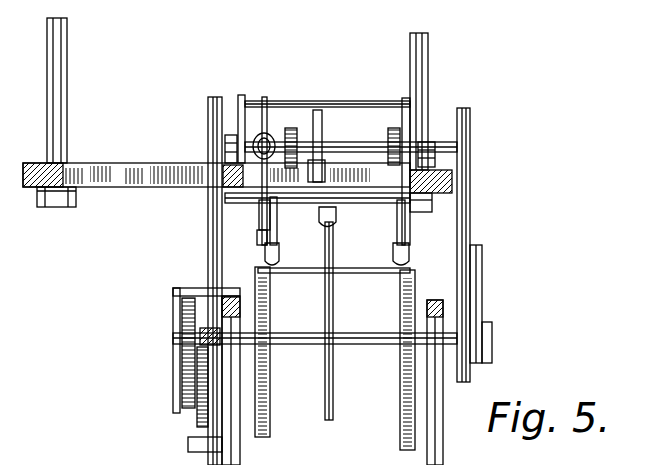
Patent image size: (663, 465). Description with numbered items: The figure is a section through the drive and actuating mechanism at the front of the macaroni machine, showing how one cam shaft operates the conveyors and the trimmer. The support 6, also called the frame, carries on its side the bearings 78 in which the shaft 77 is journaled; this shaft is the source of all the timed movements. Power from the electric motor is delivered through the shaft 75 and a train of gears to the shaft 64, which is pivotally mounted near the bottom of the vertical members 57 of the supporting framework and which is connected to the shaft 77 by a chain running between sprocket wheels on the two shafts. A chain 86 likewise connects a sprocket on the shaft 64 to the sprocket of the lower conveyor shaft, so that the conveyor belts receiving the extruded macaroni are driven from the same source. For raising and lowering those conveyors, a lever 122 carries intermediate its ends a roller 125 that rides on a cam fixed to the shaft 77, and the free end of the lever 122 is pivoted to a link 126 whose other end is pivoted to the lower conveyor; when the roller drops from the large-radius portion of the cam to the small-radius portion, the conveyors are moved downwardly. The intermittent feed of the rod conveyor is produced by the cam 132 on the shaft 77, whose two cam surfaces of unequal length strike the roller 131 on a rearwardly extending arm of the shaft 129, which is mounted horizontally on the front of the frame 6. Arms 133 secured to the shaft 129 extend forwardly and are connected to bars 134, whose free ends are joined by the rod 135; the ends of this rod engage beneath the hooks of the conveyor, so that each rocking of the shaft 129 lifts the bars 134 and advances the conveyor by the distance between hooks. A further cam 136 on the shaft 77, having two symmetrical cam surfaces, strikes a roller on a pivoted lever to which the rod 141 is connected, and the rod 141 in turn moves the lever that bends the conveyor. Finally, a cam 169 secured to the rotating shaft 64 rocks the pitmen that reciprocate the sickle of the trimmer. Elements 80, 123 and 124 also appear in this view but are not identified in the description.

The support 6 is at (133, 165).
The shaft 75 is at (208, 245).
The shaft 77 is at (363, 147).
The bearings 78 is at (232, 135).
The frame plate 80 is at (471, 228).
The chain 86 is at (483, 295).
The vertical members 57 is at (250, 305).
The shaft 64 is at (313, 340).
The lever 122 is at (261, 212).
The bar 123 is at (266, 97).
The bar 124 is at (245, 100).
The roller 125 is at (270, 133).
The link 126 is at (258, 238).
The shaft 129 is at (378, 205).
The roller 131 is at (292, 128).
The cam 132 is at (320, 112).
The arms 133 is at (278, 225).
The bars 134 is at (265, 257).
The rod 135 is at (368, 270).
The cam 136 is at (322, 120).
The rod 141 is at (333, 405).
The cam 169 is at (185, 330).